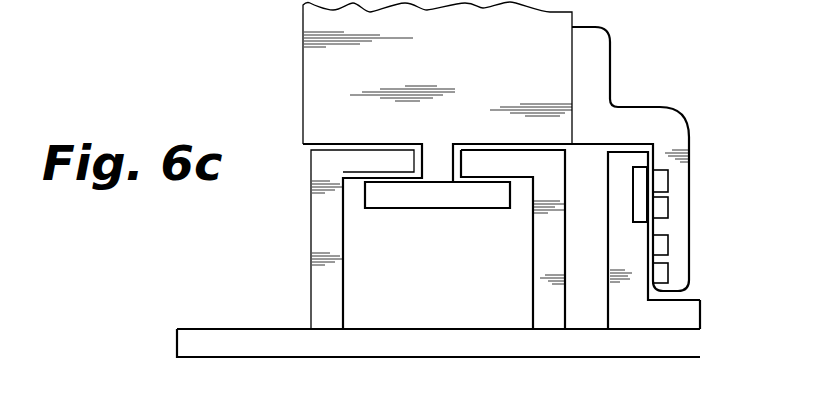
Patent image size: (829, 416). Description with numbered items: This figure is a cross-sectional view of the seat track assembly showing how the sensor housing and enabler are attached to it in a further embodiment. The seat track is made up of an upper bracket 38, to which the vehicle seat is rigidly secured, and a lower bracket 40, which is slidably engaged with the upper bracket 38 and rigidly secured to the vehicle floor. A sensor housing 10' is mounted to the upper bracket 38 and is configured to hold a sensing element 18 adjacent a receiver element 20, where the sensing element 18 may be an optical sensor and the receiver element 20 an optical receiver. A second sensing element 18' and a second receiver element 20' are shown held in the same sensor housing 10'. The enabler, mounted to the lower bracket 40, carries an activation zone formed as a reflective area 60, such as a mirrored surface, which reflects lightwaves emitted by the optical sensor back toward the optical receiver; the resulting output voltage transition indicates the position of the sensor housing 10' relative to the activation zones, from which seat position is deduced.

The upper bracket 38 is at (310, 110).
The lower bracket 40 is at (315, 230).
The sensor housing 10' is at (555, 178).
The reflective area 60 is at (633, 212).
The receiver element 20 is at (706, 167).
The sensing element 18 is at (706, 193).
The terminal 20' is at (708, 233).
The terminal 18' is at (708, 260).